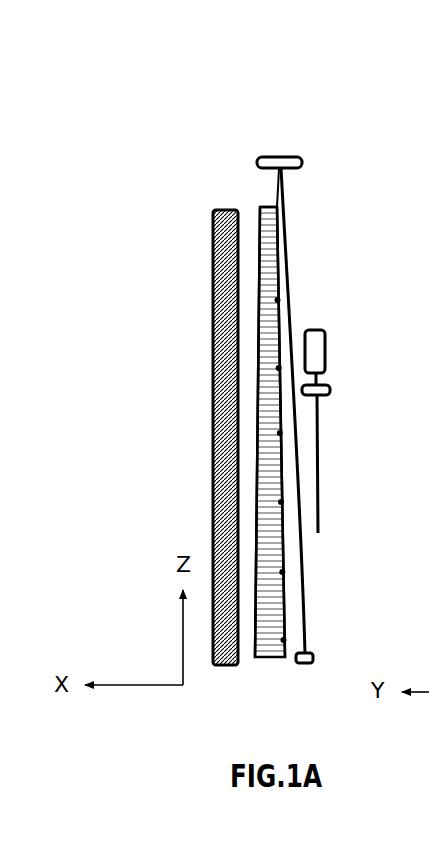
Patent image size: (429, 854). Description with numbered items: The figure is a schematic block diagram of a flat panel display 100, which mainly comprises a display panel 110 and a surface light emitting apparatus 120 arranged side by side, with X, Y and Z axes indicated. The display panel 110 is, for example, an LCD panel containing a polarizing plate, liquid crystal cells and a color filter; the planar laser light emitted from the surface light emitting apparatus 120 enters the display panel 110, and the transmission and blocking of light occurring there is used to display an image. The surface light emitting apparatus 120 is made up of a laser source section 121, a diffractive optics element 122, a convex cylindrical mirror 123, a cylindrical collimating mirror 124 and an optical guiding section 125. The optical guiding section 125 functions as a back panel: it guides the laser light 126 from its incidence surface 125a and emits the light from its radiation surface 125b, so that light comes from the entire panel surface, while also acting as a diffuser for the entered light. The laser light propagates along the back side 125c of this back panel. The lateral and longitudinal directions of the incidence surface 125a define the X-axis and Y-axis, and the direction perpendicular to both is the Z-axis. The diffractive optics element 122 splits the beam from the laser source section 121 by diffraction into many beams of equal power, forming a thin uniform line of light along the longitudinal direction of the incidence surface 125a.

The flat panel display 100 is at (134, 114).
The display panel 110 is at (213, 325).
The surface light emitting apparatus 120 is at (375, 319).
The laser source section 121 is at (326, 348).
The diffractive optics element 122 is at (331, 389).
The convex cylindrical mirror 123 is at (313, 655).
The cylindrical collimating mirror 124 is at (283, 155).
The optical guiding section 125 is at (268, 657).
The incidence surface 125a is at (264, 207).
The radiation surface 125b is at (253, 628).
The back side 125c is at (284, 592).
The laser light 126 is at (289, 273).